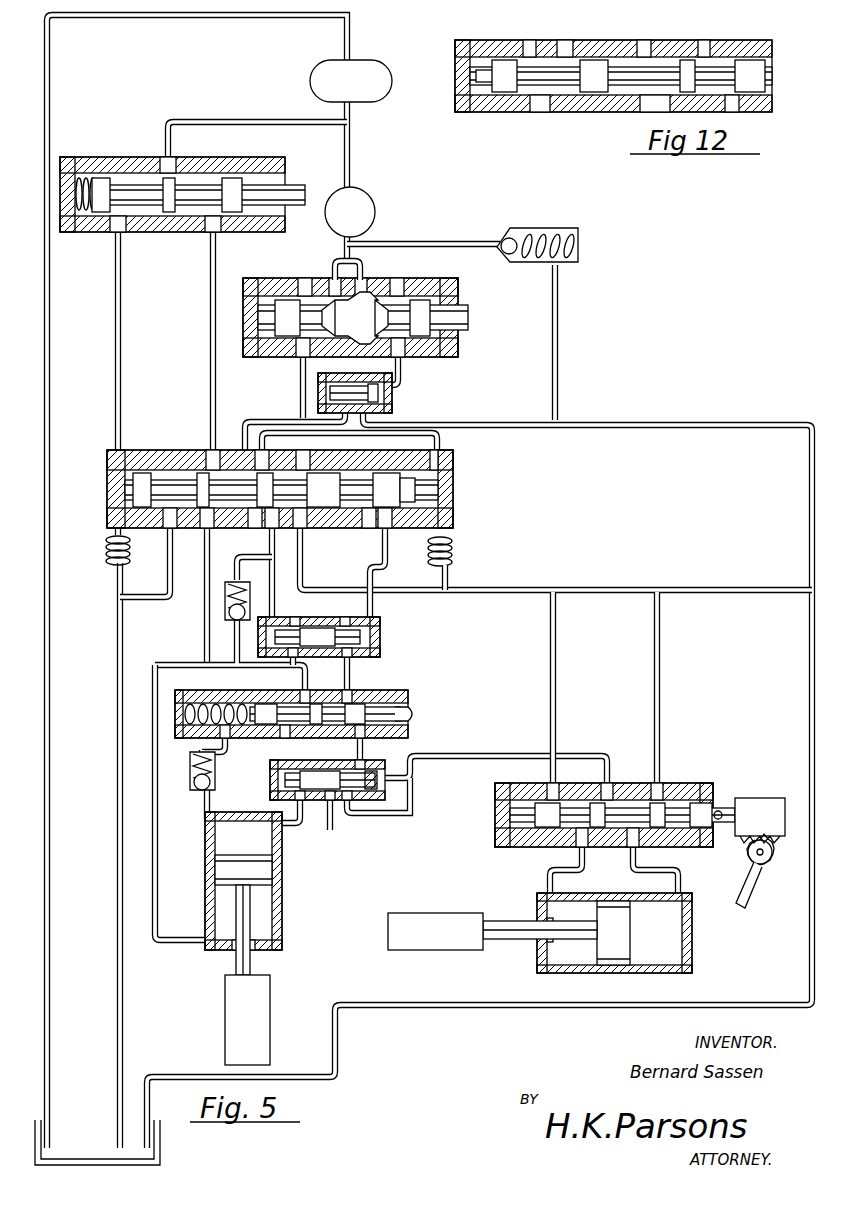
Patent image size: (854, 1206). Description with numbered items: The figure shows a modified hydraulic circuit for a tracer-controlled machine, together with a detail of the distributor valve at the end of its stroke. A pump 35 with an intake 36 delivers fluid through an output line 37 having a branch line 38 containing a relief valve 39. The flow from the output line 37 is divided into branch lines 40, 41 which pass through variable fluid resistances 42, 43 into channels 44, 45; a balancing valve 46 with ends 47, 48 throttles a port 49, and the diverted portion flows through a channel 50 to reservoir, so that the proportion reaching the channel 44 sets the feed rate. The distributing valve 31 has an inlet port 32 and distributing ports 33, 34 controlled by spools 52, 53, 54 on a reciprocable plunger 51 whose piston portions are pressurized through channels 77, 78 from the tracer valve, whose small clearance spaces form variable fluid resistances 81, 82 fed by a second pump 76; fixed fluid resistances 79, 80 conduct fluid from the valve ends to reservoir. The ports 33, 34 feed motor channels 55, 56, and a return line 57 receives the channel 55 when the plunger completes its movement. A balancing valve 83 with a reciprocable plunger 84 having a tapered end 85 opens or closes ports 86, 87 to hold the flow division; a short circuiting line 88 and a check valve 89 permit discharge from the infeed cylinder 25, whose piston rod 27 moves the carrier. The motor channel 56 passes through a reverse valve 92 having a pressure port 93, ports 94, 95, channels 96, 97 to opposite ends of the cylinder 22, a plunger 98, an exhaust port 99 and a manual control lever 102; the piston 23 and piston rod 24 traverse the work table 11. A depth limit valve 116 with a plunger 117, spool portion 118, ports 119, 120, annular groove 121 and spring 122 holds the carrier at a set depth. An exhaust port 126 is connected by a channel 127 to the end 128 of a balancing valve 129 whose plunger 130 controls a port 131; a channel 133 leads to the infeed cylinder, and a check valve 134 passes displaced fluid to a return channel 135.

In FIG. 5, the work table 11 is at (437, 945).
In FIG. 5, the cylinder 22 is at (587, 947).
In FIG. 5, the piston 23 is at (612, 970).
In FIG. 5, the piston rod 24 is at (510, 940).
In FIG. 5, the cylinder 25 is at (262, 122).
In FIG. 5, the piston rod 27 is at (250, 972).
In FIG. 5, the distributing valve 31 is at (283, 483).
In FIG. 12, the inlet port 32 is at (637, 75).
In FIG. 5, the distributing port 33 is at (255, 528).
In FIG. 12, the distributing port 33 is at (590, 95).
In FIG. 5, the distributing port 34 is at (385, 528).
In FIG. 12, the distributing port 34 is at (722, 100).
In FIG. 5, the pump 35 is at (376, 210).
In FIG. 5, the intake 36 is at (378, 158).
In FIG. 5, the output line 37 is at (345, 242).
In FIG. 5, the branch line 38 is at (460, 232).
In FIG. 5, the relief valve 39 is at (562, 226).
In FIG. 5, the branch line 40 is at (332, 270).
In FIG. 5, the branch line 41 is at (362, 268).
In FIG. 5, the variable fluid resistance 42 is at (355, 300).
In FIG. 5, the variable fluid resistance 43 is at (370, 296).
In FIG. 5, the channel 44 is at (303, 375).
In FIG. 5, the channel 45 is at (400, 384).
In FIG. 5, the balancing valve 46 is at (342, 395).
In FIG. 5, the end of balancing valve 47 is at (330, 393).
In FIG. 5, the end of balancing valve 48 is at (392, 390).
In FIG. 5, the port 49 is at (440, 433).
In FIG. 5, the channel 50 is at (612, 410).
In FIG. 5, the reciprocable plunger 51 is at (160, 474).
In FIG. 12, the reciprocable plunger 51 is at (540, 90).
In FIG. 5, the spool 52 is at (200, 474).
In FIG. 12, the spool 52 is at (598, 58).
In FIG. 12, the spool 53 is at (685, 58).
In FIG. 5, the spool 54 is at (400, 490).
In FIG. 12, the spool 54 is at (760, 58).
In FIG. 5, the motor channel 55 is at (207, 566).
In FIG. 5, the motor channel 56 is at (382, 548).
In FIG. 5, the return line 57 is at (170, 560).
In FIG. 5, the pump 76 is at (380, 88).
In FIG. 5, the channel 77 is at (118, 263).
In FIG. 5, the channel 78 is at (213, 263).
In FIG. 5, the fixed fluid resistance 79 is at (105, 547).
In FIG. 5, the fixed fluid resistance 80 is at (453, 546).
In FIG. 5, the variable fluid resistance 81 is at (182, 183).
In FIG. 5, the variable fluid resistance 82 is at (180, 175).
In FIG. 5, the balancing valve 83 is at (340, 812).
In FIG. 5, the reciprocable plunger 84 is at (330, 830).
In FIG. 5, the tapered end 85 is at (350, 815).
In FIG. 5, the port 86 is at (370, 779).
In FIG. 5, the port 87 is at (319, 780).
In FIG. 5, the short circuiting line 88 is at (236, 758).
In FIG. 5, the check valve 89 is at (190, 788).
In FIG. 5, the reverse valve 92 is at (640, 780).
In FIG. 5, the pressure port 93 is at (620, 790).
In FIG. 5, the port 94 is at (582, 850).
In FIG. 5, the port 95 is at (633, 850).
In FIG. 5, the channel 96 is at (550, 878).
In FIG. 5, the channel 97 is at (680, 872).
In FIG. 5, the plunger 98 is at (647, 834).
In FIG. 5, the exhaust port 99 is at (672, 800).
In FIG. 5, the manual control lever 102 is at (745, 897).
In FIG. 5, the depth limit valve 116 is at (250, 688).
In FIG. 5, the plunger 117 is at (410, 712).
In FIG. 5, the spool portion 118 is at (318, 724).
In FIG. 5, the port 119 is at (355, 706).
In FIG. 5, the port 120 is at (272, 724).
In FIG. 5, the annular groove 121 is at (385, 708).
In FIG. 5, the spring 122 is at (268, 723).
In FIG. 5, the exhaust port 126 is at (273, 545).
In FIG. 5, the channel 127 is at (275, 579).
In FIG. 5, the end of balancing valve 128 is at (319, 626).
In FIG. 5, the balancing valve 129 is at (318, 628).
In FIG. 5, the plunger 130 is at (370, 612).
In FIG. 5, the port 131 is at (295, 658).
In FIG. 5, the channel 133 is at (157, 893).
In FIG. 5, the check valve 134 is at (303, 528).
In FIG. 5, the return channel 135 is at (425, 596).